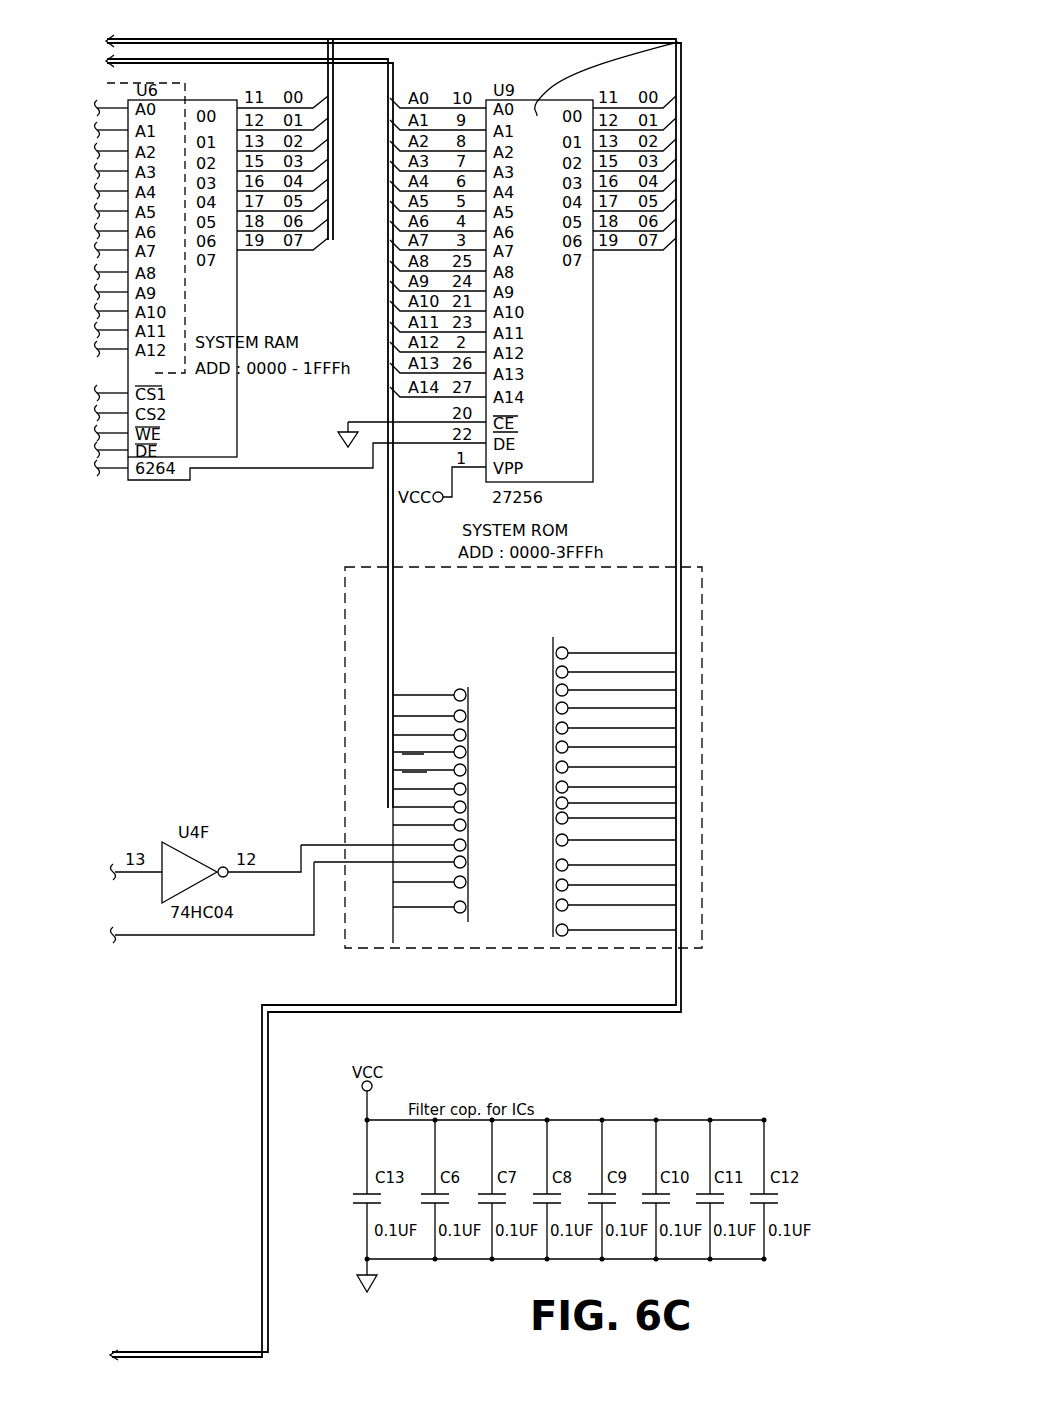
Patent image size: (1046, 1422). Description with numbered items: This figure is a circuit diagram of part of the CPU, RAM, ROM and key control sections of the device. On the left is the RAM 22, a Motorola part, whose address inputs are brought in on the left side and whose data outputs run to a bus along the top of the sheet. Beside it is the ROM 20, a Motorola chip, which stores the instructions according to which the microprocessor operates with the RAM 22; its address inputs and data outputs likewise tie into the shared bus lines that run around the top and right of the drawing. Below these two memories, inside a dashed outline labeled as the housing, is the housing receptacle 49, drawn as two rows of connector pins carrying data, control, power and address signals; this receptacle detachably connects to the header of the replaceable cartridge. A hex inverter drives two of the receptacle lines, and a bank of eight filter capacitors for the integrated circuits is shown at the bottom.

The ROM 20 is at (722, 34).
The RAM 22 is at (97, 131).
The housing receptacle 49 is at (692, 637).